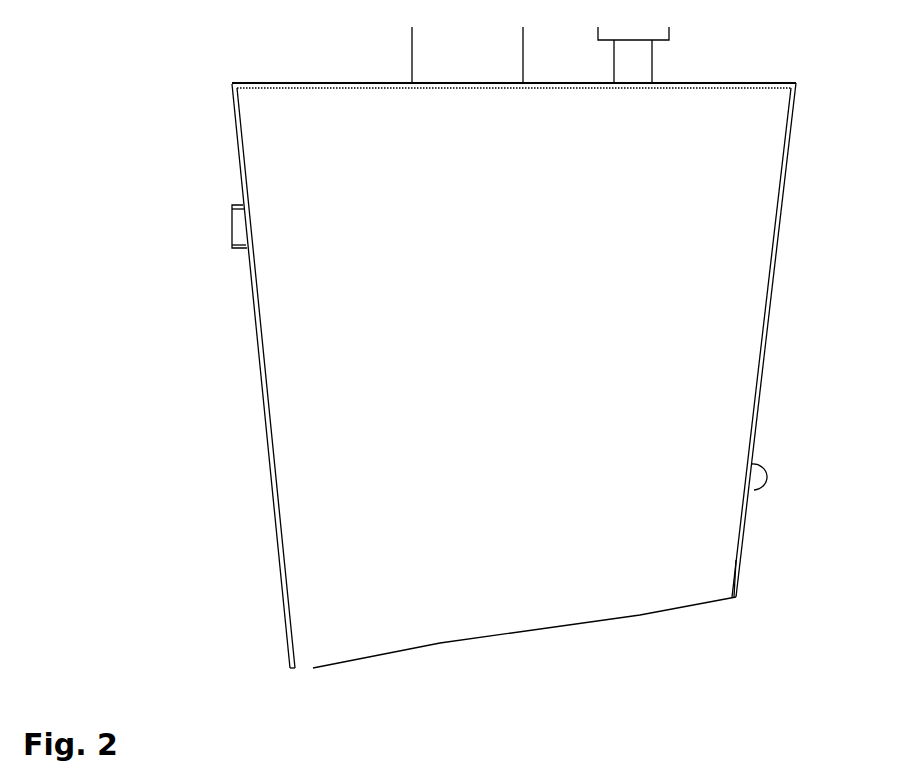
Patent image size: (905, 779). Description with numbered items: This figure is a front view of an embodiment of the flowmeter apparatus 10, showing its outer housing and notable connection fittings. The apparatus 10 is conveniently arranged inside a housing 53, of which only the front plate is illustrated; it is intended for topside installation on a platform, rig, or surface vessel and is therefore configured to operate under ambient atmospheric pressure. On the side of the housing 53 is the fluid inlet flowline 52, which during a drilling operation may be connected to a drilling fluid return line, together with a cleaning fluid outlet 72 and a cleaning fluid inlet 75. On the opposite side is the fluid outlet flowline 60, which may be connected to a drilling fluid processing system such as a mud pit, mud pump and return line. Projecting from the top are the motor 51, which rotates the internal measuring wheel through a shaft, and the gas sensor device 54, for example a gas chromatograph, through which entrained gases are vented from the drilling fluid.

The flowmeter apparatus 10 is at (446, 347).
The motor 51 is at (426, 37).
The gas sensor device 54 is at (684, 28).
The fluid inlet flowline 52 is at (229, 230).
The cleaning fluid outlet 72 is at (229, 206).
The cleaning fluid inlet 75 is at (233, 250).
The fluid outlet flowline 60 is at (770, 479).
The housing 53 is at (775, 578).